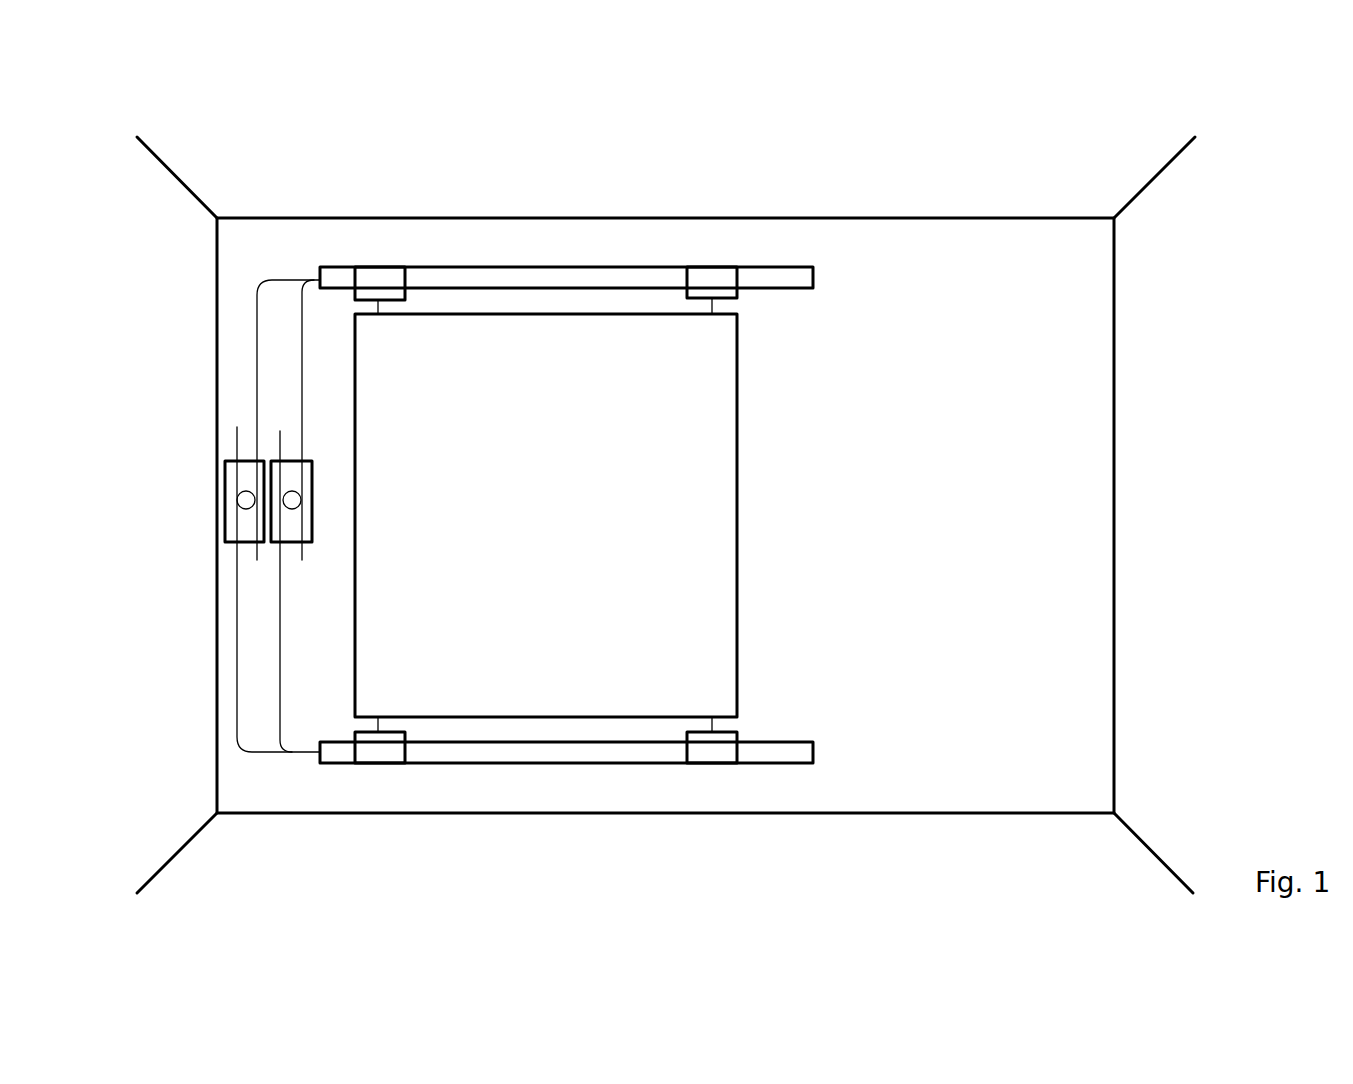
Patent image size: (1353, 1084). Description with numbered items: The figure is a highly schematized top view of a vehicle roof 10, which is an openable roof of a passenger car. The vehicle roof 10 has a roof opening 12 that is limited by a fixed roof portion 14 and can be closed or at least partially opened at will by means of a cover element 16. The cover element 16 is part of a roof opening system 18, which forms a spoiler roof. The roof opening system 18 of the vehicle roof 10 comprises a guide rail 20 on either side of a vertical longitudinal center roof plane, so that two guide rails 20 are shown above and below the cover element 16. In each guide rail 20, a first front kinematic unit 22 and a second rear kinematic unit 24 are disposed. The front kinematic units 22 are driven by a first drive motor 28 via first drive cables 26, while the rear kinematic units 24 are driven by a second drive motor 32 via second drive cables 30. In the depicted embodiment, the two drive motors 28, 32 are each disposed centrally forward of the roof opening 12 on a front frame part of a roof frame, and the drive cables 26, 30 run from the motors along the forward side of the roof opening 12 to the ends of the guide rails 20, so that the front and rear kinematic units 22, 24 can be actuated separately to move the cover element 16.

The vehicle roof 10 is at (671, 497).
The roof opening 12 is at (442, 314).
The fixed roof portion 14 is at (958, 517).
The cover element 16 is at (552, 525).
The roof opening system 18 is at (497, 258).
The guide rail 20 is at (565, 267).
The first front kinematic unit 22 is at (377, 267).
The second rear kinematic unit 24 is at (712, 266).
The first drive cables 26 is at (257, 375).
The first drive motor 28 is at (246, 500).
The second drive cables 30 is at (302, 350).
The second drive motor 32 is at (292, 498).